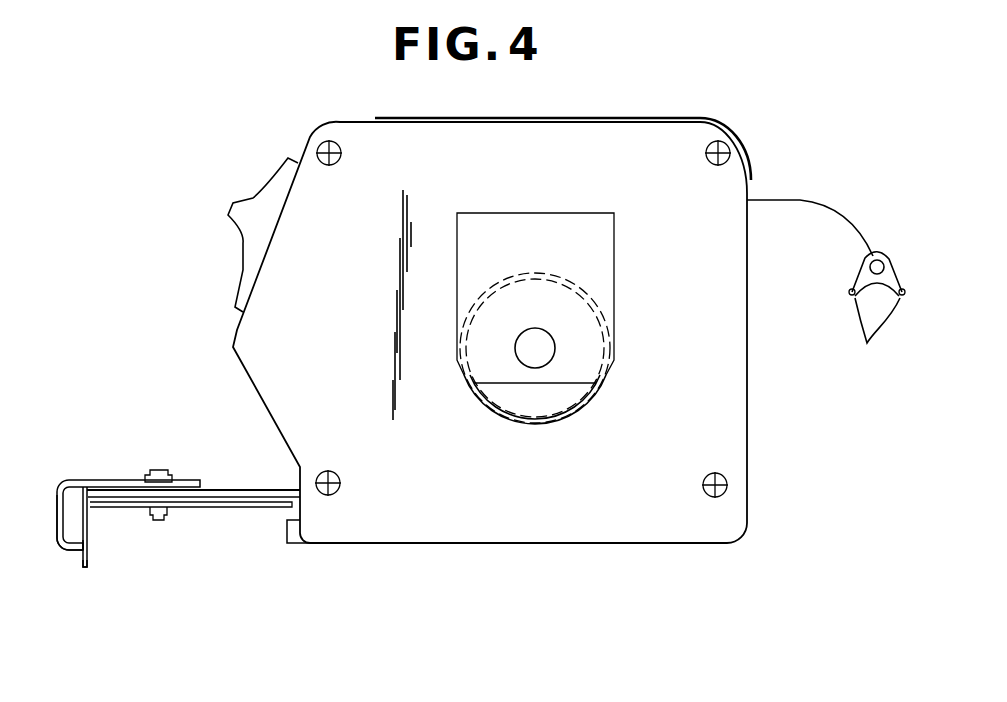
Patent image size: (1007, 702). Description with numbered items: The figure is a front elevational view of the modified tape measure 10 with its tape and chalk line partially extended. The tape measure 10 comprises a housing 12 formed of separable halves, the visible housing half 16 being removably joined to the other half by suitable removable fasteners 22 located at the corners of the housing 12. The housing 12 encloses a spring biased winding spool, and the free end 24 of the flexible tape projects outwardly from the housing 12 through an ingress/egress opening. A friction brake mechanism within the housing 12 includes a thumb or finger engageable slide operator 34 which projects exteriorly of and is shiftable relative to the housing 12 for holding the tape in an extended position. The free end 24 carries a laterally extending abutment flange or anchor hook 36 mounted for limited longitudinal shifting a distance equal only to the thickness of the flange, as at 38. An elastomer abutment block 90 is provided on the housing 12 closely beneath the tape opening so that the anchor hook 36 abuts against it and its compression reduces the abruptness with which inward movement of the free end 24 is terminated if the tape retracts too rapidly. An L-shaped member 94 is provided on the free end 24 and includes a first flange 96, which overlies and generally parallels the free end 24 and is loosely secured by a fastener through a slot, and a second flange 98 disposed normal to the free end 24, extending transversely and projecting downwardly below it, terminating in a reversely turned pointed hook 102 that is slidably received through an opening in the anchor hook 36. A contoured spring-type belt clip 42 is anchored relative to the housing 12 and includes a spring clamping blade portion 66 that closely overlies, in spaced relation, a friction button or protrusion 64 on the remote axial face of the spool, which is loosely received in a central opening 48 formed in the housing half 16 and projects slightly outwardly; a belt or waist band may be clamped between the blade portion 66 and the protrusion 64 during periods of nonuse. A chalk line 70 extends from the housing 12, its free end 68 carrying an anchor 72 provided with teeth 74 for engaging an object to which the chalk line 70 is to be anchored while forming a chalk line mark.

The tape measure 10 is at (713, 117).
The housing 12 is at (237, 330).
The housing half 16 is at (575, 532).
The removable fasteners 22 is at (326, 165).
The free end of the tape 24 is at (227, 490).
The slide operator 34 is at (253, 207).
The abutment flange or anchor hook 36 is at (82, 553).
The limited shifting distance 38 is at (85, 570).
The belt clip 42 is at (607, 249).
The central opening 48 is at (530, 423).
The friction button or protrusion 64 is at (563, 395).
The spring clamping blade portion 66 is at (614, 332).
The free end of the chalk line 68 is at (855, 228).
The chalk line 70 is at (800, 200).
The anchor 72 is at (894, 262).
The teeth 74 is at (875, 335).
The elastomer abutment block 90 is at (293, 540).
The L-shaped member 94 is at (52, 488).
The first flange 96 is at (100, 480).
The second flange 98 is at (53, 513).
The reversely turned pointed hook 102 is at (90, 548).